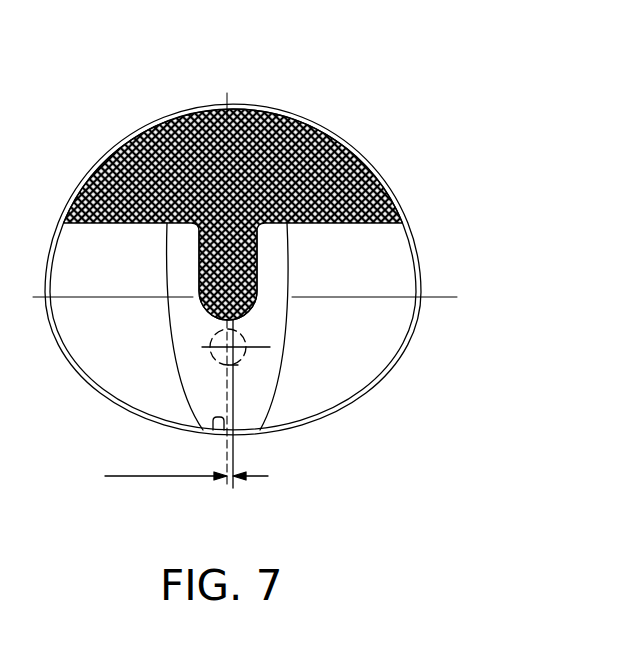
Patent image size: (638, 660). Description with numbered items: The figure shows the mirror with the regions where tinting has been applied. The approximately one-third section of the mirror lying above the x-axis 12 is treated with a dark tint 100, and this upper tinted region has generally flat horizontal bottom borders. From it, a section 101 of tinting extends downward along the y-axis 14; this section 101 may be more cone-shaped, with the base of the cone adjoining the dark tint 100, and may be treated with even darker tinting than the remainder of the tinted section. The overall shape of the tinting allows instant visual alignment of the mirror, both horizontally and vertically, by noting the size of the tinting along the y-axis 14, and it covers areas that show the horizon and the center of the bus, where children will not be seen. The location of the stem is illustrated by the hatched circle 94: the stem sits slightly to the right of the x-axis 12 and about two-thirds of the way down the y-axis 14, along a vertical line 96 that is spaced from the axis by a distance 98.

The x-axis 12 is at (39, 298).
The y-axis 14 is at (229, 108).
The dark tint 100 is at (358, 162).
The tinting section 101 is at (257, 273).
The hatched circle 94 is at (250, 347).
The vertical line 96 is at (250, 396).
The distance 98 is at (229, 490).